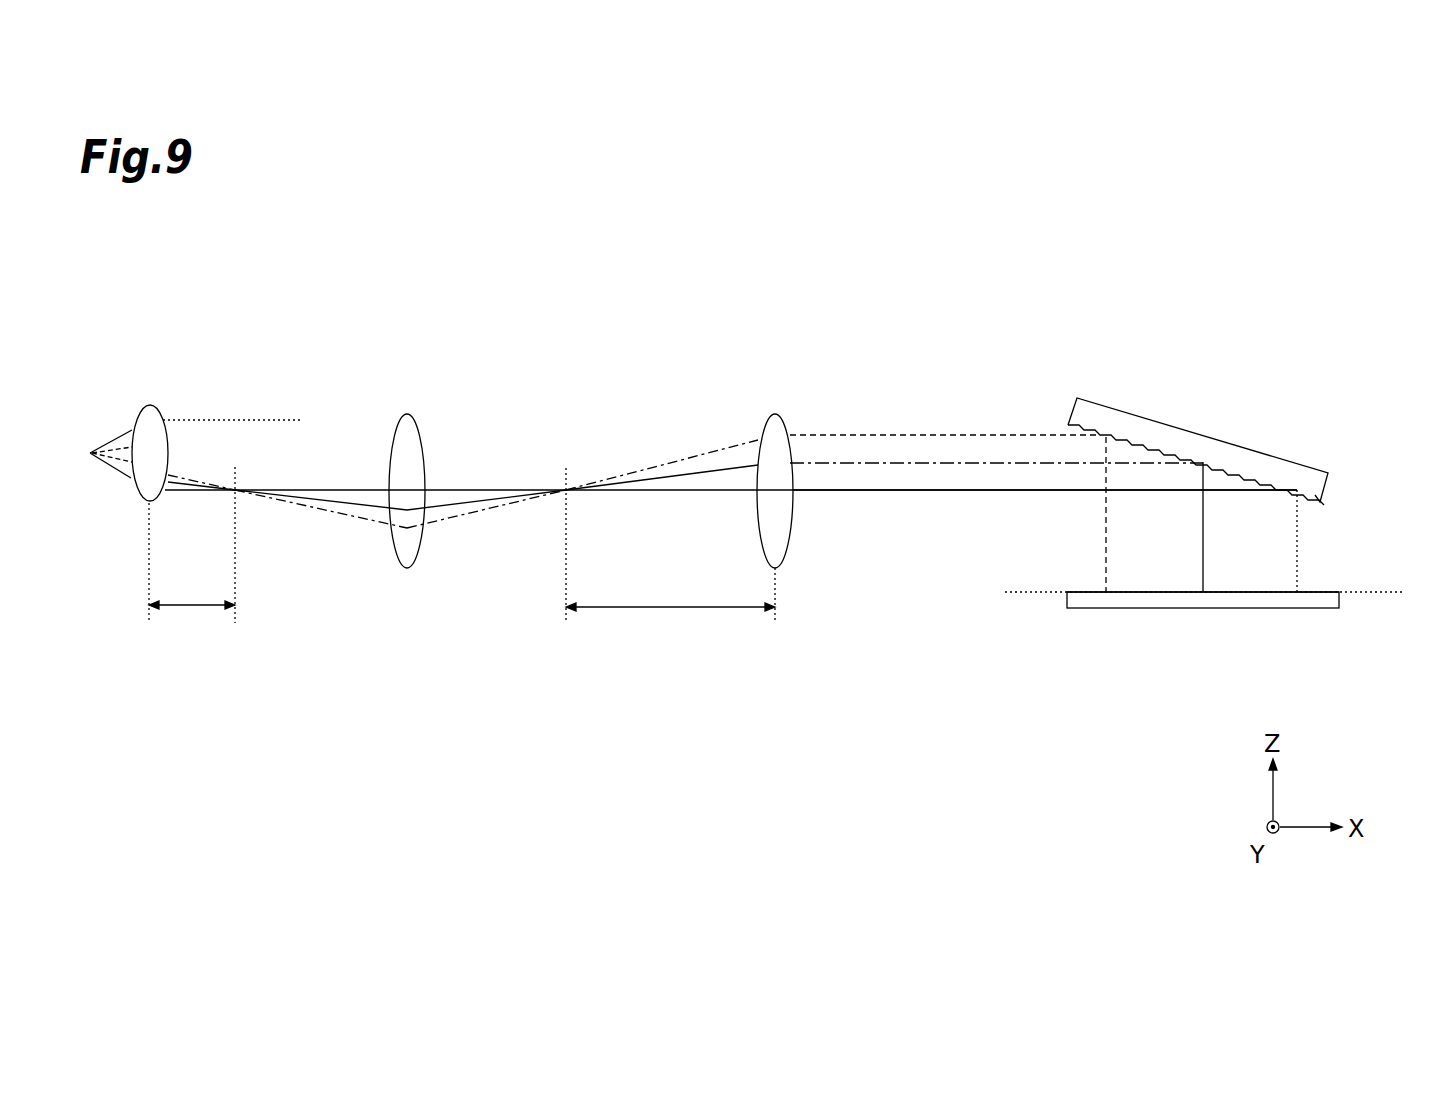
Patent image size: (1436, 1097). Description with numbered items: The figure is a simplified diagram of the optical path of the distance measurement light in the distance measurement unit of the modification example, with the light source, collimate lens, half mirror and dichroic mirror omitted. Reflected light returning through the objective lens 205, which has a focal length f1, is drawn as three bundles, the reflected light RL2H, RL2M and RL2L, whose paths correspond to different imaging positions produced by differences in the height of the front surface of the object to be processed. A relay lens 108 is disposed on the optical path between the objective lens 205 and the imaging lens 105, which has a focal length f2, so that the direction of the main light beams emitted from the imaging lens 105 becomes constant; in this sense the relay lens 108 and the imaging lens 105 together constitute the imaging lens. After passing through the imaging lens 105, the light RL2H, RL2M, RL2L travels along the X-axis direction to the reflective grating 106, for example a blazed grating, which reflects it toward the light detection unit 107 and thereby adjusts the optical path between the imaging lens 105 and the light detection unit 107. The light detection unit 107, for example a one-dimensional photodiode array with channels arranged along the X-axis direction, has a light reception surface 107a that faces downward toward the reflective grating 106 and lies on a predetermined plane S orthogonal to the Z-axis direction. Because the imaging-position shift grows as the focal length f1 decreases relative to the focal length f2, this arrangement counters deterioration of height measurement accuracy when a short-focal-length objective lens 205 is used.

The objective lens 205 is at (150, 404).
The relay lens 108 is at (407, 414).
The imaging lens 105 is at (775, 414).
The reflective grating 106 is at (1197, 434).
The light detection unit 107 is at (1205, 610).
The light reception surface 107a is at (1318, 590).
The predetermined plane S is at (1388, 590).
The reflected light (high) RL2H is at (875, 434).
The reflected light (middle) RL2M is at (978, 462).
The reflected light (low) RL2L is at (918, 494).
The focal length of the objective lens f1 is at (192, 590).
The focal length of the imaging lens f2 is at (670, 592).